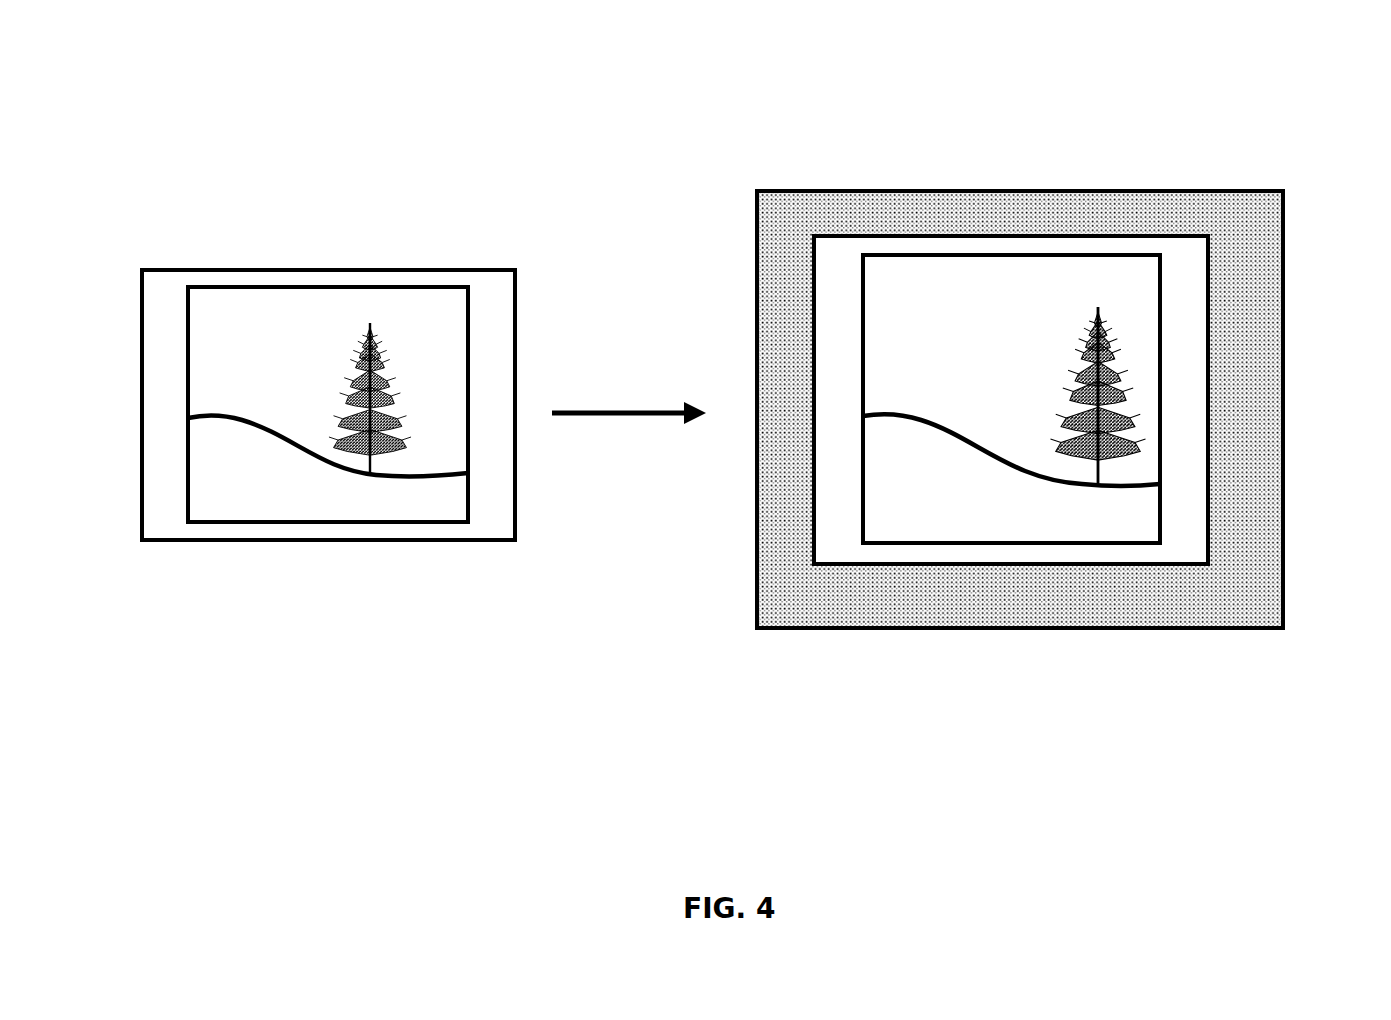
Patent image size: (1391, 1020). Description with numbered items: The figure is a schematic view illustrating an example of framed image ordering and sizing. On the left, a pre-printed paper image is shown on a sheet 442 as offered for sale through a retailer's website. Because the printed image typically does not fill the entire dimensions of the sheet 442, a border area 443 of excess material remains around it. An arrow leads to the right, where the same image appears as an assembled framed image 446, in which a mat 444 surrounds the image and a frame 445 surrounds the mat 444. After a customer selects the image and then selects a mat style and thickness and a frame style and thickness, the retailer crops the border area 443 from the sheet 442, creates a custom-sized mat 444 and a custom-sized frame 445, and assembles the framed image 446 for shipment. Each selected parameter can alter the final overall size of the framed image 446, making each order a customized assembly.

The sheet 442 is at (374, 368).
The border area 443 is at (498, 340).
The mat 444 is at (1172, 397).
The frame 445 is at (1232, 467).
The framed image 446 is at (1069, 326).